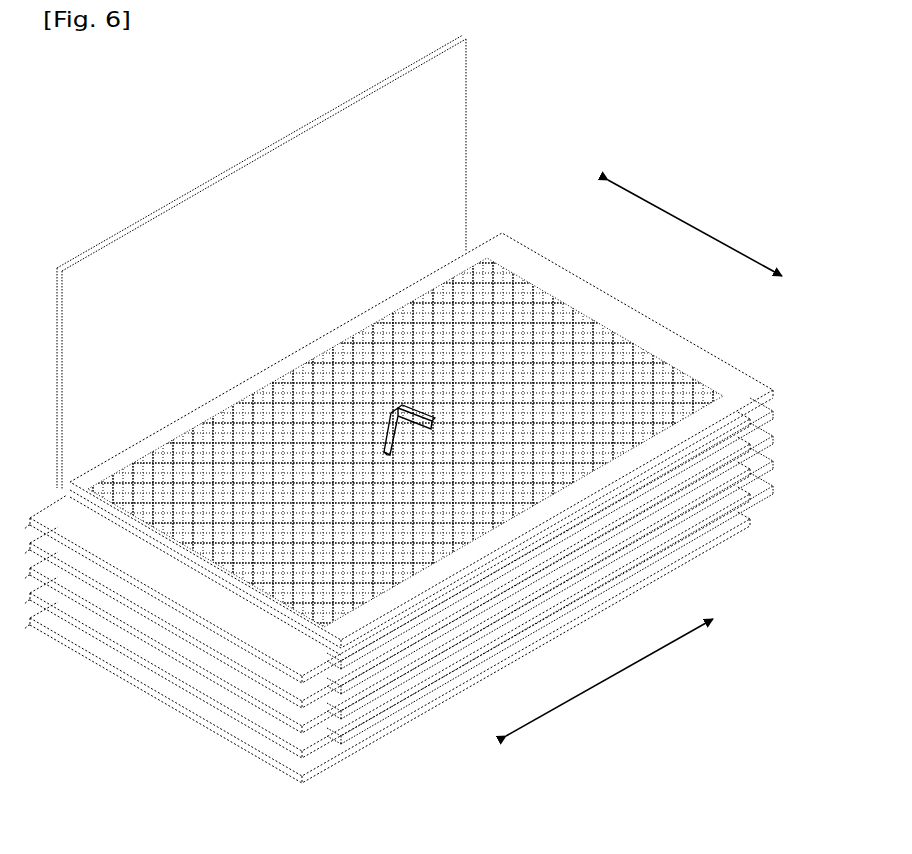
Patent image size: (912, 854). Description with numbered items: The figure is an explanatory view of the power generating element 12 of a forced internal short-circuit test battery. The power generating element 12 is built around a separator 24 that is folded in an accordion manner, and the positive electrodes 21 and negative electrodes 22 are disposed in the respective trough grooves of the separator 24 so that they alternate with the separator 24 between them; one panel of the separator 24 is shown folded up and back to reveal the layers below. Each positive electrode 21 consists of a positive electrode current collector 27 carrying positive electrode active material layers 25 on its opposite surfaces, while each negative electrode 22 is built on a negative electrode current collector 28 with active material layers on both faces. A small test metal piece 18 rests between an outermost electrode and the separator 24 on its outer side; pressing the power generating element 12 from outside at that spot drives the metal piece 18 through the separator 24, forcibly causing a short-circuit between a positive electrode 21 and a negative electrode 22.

The power generating element 12 is at (702, 119).
The metal piece 18 is at (402, 424).
The positive electrode 21 is at (421, 483).
The negative electrode 22 is at (240, 622).
The separator 24 is at (444, 161).
The positive electrode active material layer 25 is at (527, 305).
The positive electrode current collector 27 is at (604, 292).
The negative electrode current collector 28 is at (115, 608).